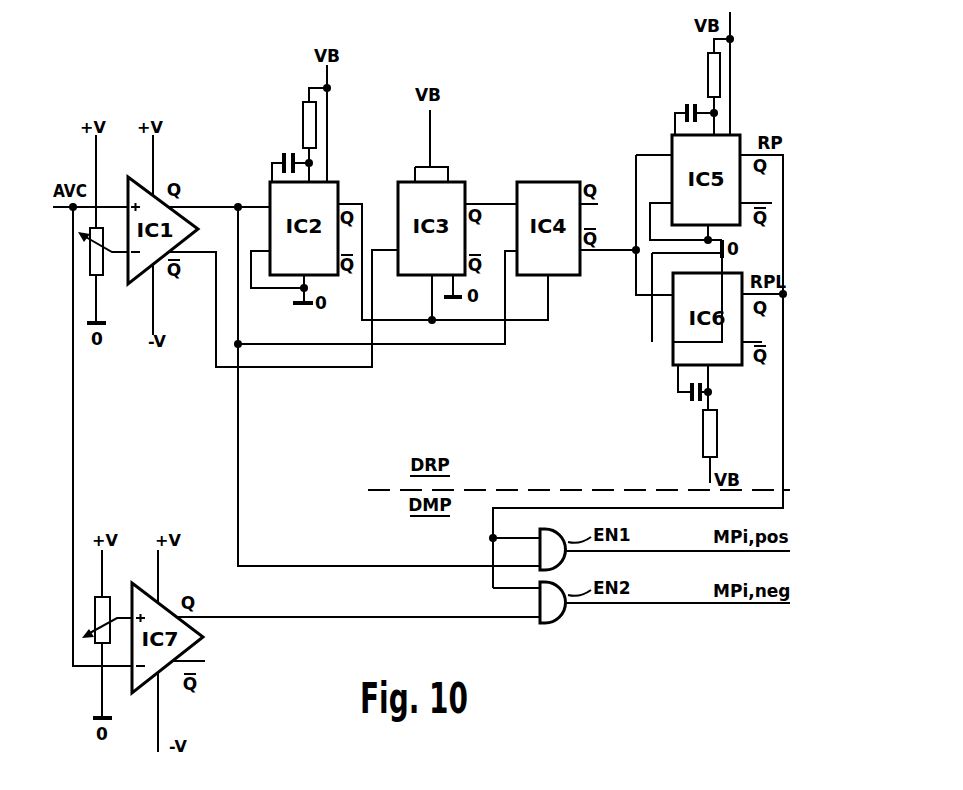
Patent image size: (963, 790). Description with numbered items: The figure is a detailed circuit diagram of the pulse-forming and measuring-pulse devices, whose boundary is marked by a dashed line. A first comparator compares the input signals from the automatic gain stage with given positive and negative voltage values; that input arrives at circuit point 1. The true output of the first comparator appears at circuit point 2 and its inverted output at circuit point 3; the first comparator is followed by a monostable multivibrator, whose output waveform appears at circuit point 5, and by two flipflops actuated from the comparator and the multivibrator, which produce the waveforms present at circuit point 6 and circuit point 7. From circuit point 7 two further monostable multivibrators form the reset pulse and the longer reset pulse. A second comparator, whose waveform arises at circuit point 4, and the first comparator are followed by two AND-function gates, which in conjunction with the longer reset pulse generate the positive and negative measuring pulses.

The circuit point 1 is at (94, 205).
The circuit point 2 is at (354, 374).
The circuit point 3 is at (283, 308).
The circuit point 4 is at (358, 605).
The circuit point 5 is at (443, 252).
The circuit point 6 is at (491, 192).
The circuit point 7 is at (626, 225).